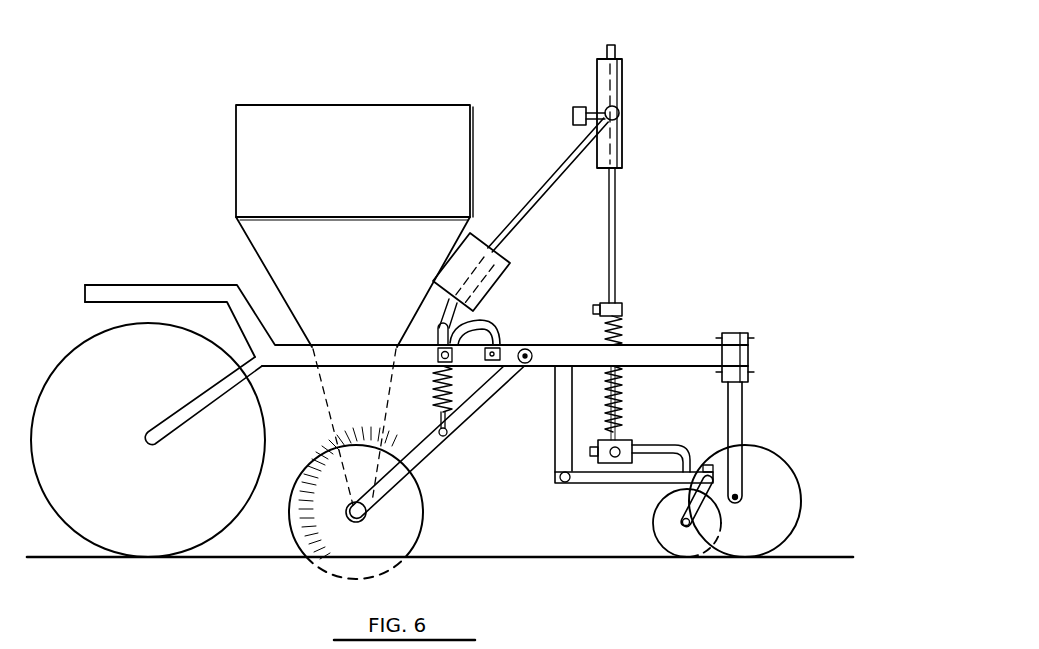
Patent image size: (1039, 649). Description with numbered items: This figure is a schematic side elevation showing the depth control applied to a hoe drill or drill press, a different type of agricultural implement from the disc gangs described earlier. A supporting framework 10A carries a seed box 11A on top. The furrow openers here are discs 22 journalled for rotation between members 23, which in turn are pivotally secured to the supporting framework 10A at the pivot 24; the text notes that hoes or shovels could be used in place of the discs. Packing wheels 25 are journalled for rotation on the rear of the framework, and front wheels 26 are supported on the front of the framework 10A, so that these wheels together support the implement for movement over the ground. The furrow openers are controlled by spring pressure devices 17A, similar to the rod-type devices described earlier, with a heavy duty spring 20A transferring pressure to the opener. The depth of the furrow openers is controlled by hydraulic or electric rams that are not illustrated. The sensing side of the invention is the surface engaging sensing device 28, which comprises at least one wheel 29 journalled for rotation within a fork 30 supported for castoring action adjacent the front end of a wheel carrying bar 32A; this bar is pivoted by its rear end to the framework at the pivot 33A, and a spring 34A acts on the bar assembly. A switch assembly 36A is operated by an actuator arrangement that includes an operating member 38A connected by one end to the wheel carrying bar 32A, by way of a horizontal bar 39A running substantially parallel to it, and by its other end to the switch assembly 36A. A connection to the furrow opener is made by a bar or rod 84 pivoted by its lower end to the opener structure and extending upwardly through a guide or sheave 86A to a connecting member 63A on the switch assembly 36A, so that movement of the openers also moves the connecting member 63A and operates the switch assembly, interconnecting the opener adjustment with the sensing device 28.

The supporting framework 10A is at (379, 346).
The seed box 11A is at (379, 187).
The spring pressure devices 17A is at (439, 430).
The heavy duty spring 20A is at (436, 381).
The furrow opener disc 22 is at (413, 513).
The members 23 is at (423, 452).
The pivot 24 is at (527, 367).
The packing wheels 25 is at (233, 447).
The front wheels 26 is at (788, 517).
The surface engaging sensing device 28 is at (608, 532).
The wheel 29 is at (660, 541).
The fork 30 is at (700, 523).
The wheel carrying bar 32A is at (635, 478).
The pivot 33A is at (556, 480).
The spring 34A is at (622, 410).
The switch assembly 36A is at (678, 113).
The operating member 38A is at (620, 42).
The horizontal bar 39A is at (640, 448).
The connecting member 63A is at (572, 122).
The bar or rod 84 is at (533, 208).
The guide or sheave 86A is at (497, 283).